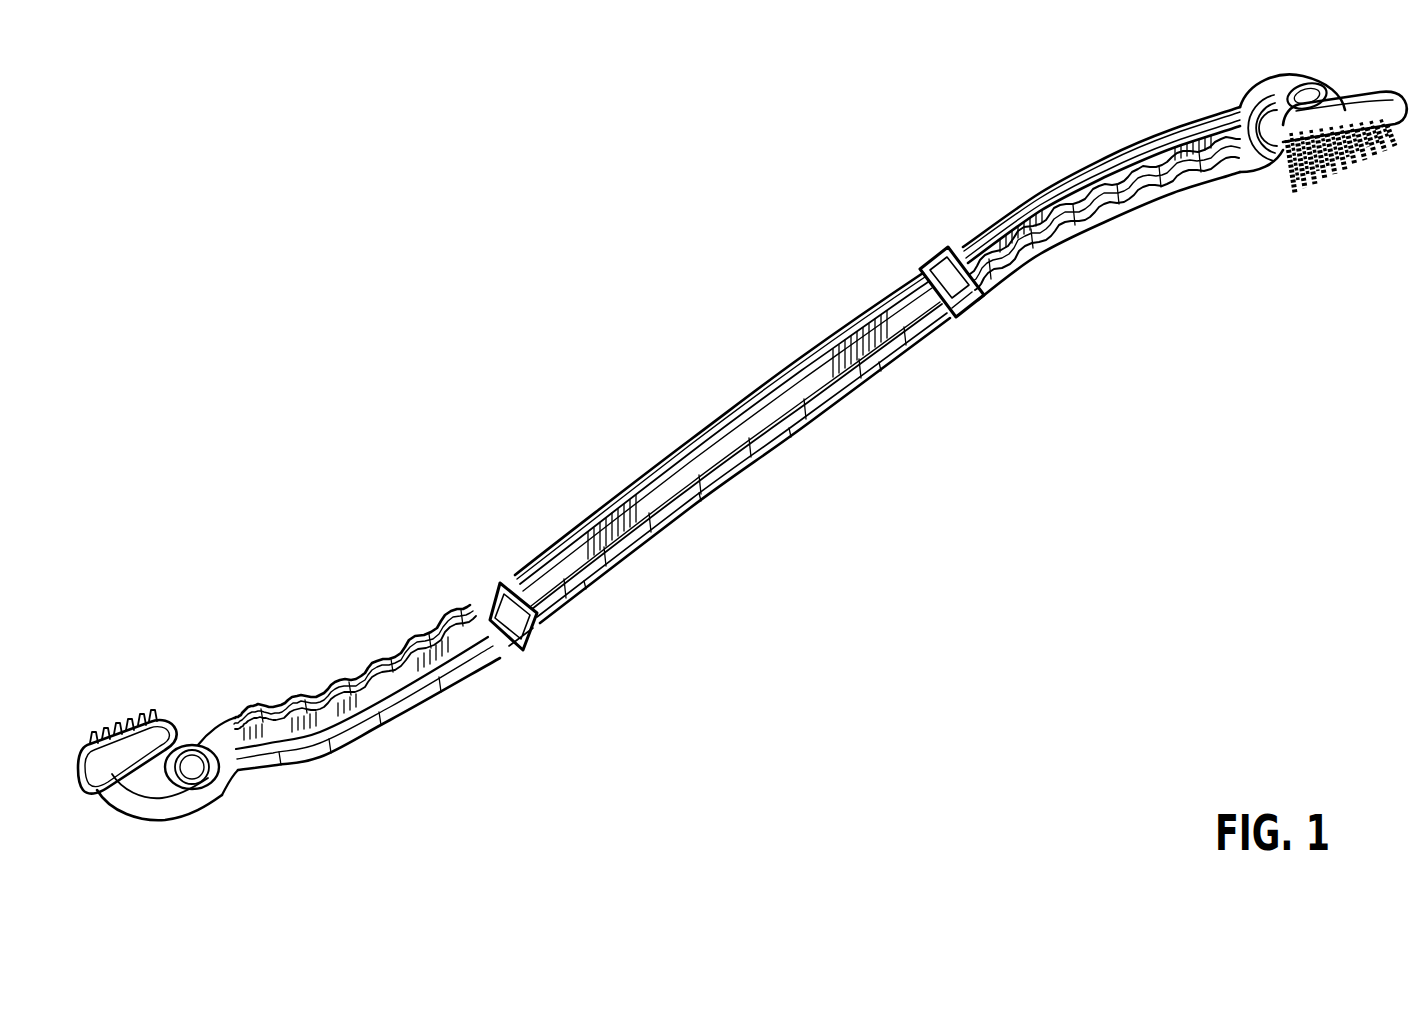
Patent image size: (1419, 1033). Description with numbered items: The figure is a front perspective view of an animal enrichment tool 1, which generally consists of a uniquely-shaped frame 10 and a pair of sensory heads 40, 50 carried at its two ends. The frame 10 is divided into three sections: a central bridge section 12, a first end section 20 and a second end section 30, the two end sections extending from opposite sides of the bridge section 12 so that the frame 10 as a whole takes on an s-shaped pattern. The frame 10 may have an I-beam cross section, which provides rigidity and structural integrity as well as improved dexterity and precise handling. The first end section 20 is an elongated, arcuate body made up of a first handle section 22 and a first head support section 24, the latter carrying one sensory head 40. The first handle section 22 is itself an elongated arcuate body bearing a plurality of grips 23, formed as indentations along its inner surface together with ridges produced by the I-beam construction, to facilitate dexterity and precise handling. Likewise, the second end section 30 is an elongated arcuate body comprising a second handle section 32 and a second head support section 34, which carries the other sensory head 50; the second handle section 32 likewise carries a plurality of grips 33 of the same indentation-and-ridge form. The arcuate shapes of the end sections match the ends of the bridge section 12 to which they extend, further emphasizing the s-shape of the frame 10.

The animal enrichment tool 1 is at (549, 396).
The frame 10 is at (532, 566).
The bridge section 12 is at (706, 512).
The first end section 20 is at (1104, 160).
The first handle section 22 is at (1003, 213).
The grips 23 is at (1086, 238).
The first head support section 24 is at (1318, 84).
The sensory head 40 is at (1350, 193).
The second end section 30 is at (278, 768).
The second handle section 32 is at (400, 720).
The grips 33 is at (312, 692).
The second head support section 34 is at (115, 815).
The sensory head 50 is at (140, 740).